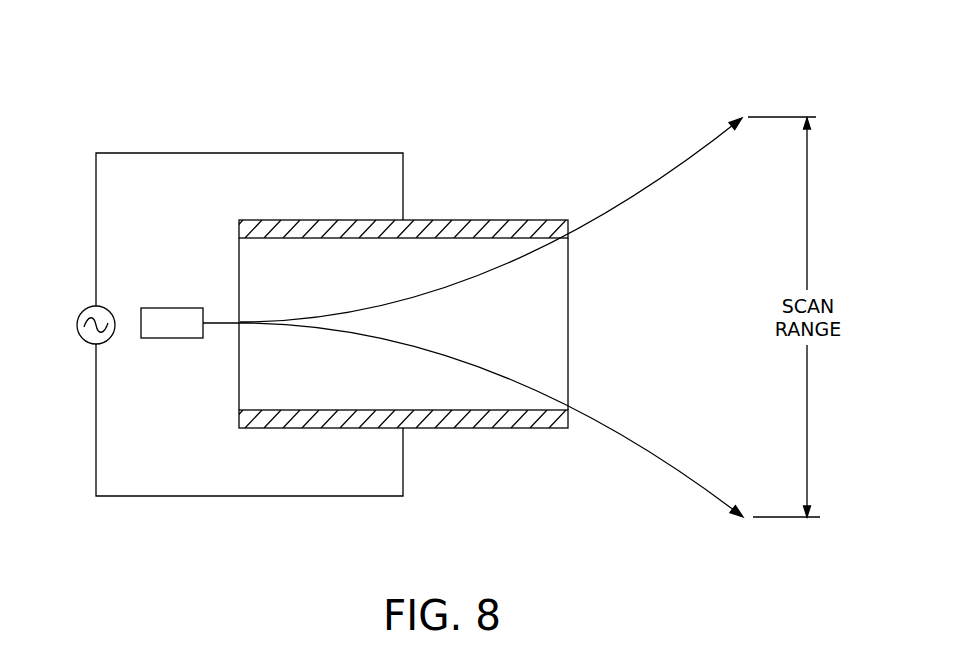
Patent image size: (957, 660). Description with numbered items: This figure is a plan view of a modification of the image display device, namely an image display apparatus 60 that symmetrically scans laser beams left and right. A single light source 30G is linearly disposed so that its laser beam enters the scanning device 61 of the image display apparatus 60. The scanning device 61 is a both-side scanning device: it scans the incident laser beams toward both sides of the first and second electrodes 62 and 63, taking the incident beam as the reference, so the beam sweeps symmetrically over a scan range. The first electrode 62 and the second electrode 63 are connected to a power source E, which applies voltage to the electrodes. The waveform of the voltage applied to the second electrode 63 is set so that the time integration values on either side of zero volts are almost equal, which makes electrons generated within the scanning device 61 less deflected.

The image display apparatus 60 is at (484, 276).
The scanning device 61 is at (577, 195).
The first electrode 62 is at (465, 222).
The second electrode 63 is at (469, 418).
The light source 30G is at (176, 308).
The power source E is at (111, 313).